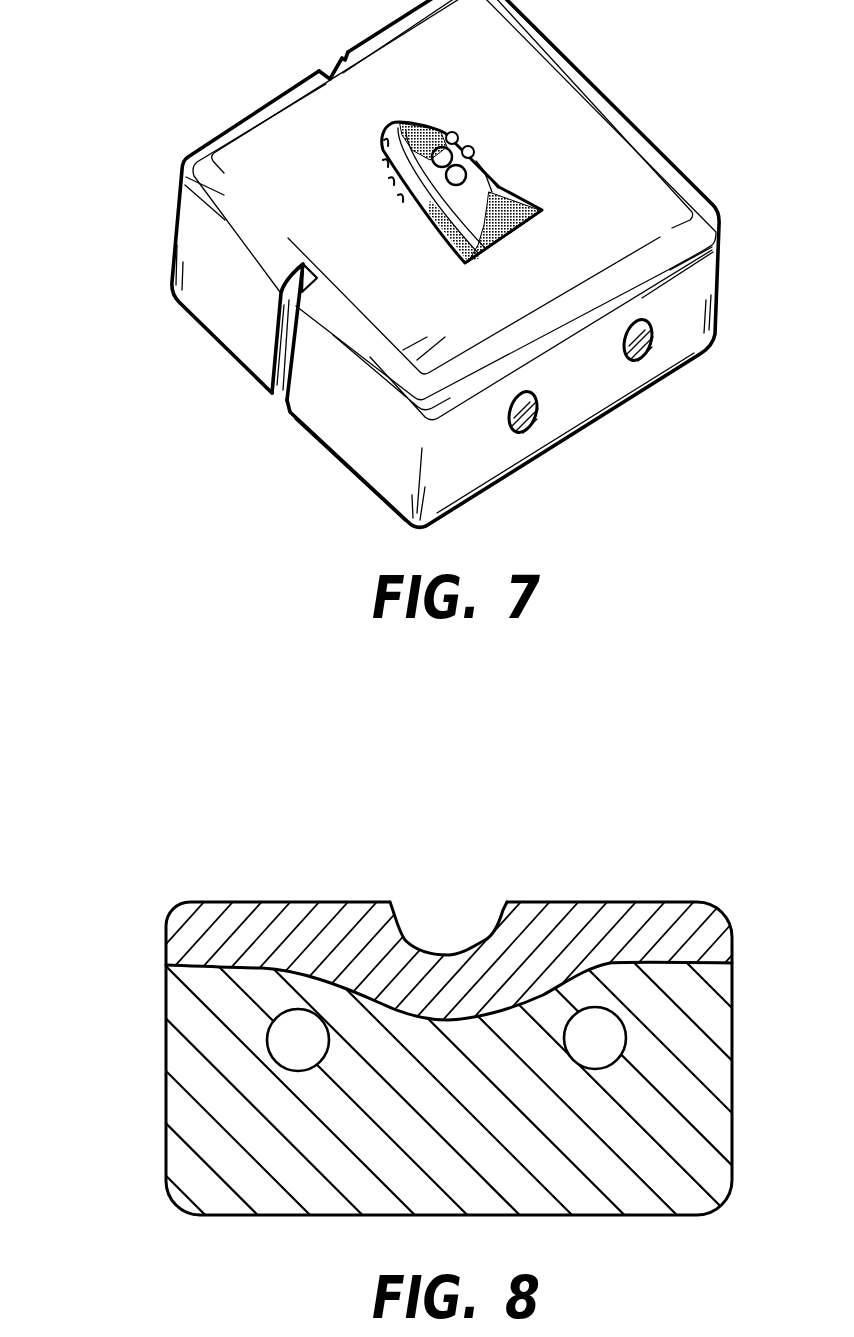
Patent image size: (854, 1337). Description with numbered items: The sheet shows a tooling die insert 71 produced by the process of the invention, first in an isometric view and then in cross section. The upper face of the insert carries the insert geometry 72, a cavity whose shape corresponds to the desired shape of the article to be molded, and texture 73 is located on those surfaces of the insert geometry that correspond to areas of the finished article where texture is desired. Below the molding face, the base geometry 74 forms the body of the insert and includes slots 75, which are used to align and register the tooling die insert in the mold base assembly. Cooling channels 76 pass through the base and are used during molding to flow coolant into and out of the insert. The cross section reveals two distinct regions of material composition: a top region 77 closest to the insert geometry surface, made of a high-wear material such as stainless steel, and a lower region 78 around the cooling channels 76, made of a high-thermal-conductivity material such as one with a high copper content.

In FIG. 7, the tooling die insert 71 is at (118, 119).
In FIG. 7, the insert geometry 72 is at (491, 191).
In FIG. 8, the insert geometry 72 is at (448, 955).
In FIG. 7, the texture 73 is at (421, 134).
In FIG. 7, the base geometry 74 is at (677, 336).
In FIG. 7, the slots 75 is at (325, 74).
In FIG. 7, the cooling channels 76 is at (537, 421).
In FIG. 8, the cooling channels 76 is at (302, 1040).
In FIG. 8, the top region 77 is at (190, 930).
In FIG. 8, the lower region 78 is at (178, 1152).